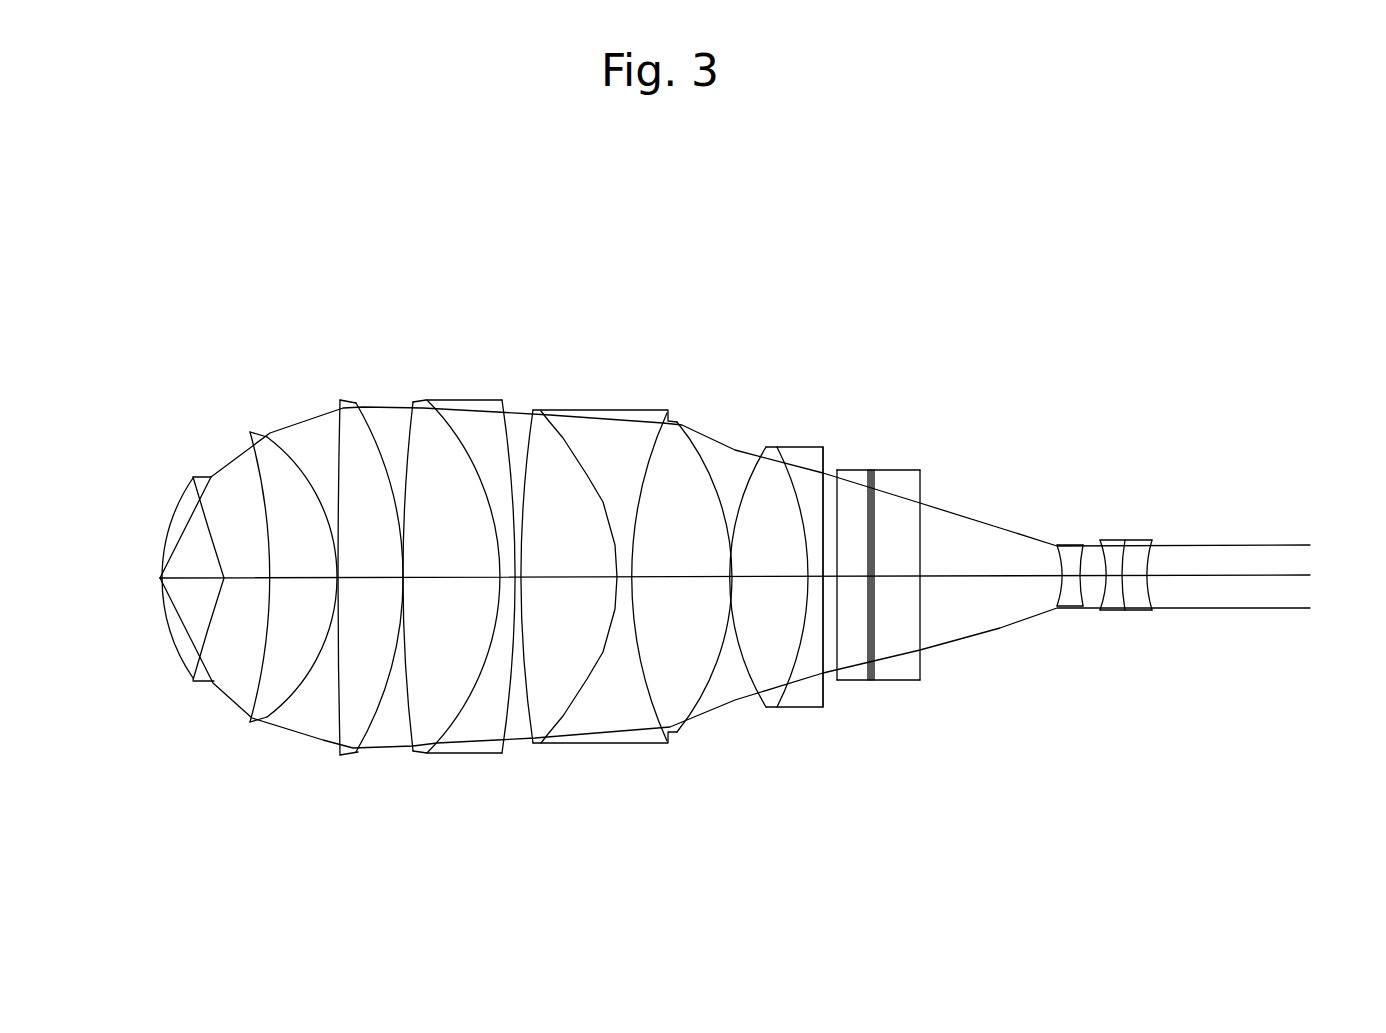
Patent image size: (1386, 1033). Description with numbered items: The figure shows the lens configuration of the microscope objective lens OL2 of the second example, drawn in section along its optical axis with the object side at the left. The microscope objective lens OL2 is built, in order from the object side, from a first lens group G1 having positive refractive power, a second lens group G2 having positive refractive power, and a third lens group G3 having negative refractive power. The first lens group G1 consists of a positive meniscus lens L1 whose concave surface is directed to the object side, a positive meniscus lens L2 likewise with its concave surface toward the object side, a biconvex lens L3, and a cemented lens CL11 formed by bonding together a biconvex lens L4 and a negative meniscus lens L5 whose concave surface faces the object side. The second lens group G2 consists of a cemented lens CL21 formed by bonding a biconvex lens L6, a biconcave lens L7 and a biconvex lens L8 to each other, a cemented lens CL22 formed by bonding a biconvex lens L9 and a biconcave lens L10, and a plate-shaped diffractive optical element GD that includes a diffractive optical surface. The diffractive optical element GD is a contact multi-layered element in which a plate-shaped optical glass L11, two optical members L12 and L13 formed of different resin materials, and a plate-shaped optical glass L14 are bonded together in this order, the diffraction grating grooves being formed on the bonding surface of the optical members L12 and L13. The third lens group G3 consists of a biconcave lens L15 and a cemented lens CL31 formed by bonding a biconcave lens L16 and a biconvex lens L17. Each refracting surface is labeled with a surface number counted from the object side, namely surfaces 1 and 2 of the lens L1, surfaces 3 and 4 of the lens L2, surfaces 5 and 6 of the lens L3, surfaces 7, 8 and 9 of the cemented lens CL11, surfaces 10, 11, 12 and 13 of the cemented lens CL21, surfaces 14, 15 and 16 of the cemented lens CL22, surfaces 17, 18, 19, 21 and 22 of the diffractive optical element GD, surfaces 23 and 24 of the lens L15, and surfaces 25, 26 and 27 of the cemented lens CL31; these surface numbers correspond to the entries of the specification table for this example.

The surface number 1 is at (190, 660).
The surface number 2 is at (195, 681).
The surface number 3 is at (250, 722).
The surface number 4 is at (266, 724).
The surface number 5 is at (347, 748).
The surface number 6 is at (362, 752).
The surface number 7 is at (410, 748).
The surface number 8 is at (430, 753).
The surface number 9 is at (503, 750).
The surface number 10 is at (545, 740).
The surface number 11 is at (556, 742).
The surface number 12 is at (663, 733).
The surface number 13 is at (686, 733).
The surface number 14 is at (755, 703).
The surface number 15 is at (780, 706).
The surface number 16 is at (822, 708).
The surface number 17 is at (836, 681).
The surface number 18 is at (867, 681).
The surface number 19 is at (870, 681).
The surface number 21 is at (875, 681).
The surface number 22 is at (920, 681).
The surface number 23 is at (1057, 602).
The surface number 24 is at (1085, 606).
The surface number 25 is at (1102, 610).
The surface number 26 is at (1126, 610).
The surface number 27 is at (1149, 610).
The positive meniscus lens L1 is at (192, 477).
The positive meniscus lens L2 is at (250, 430).
The biconvex lens L3 is at (343, 400).
The biconvex lens L4 is at (413, 402).
The negative meniscus lens L5 is at (469, 400).
The biconvex lens L6 is at (543, 411).
The biconcave lens L7 is at (615, 412).
The biconvex lens L8 is at (675, 421).
The biconvex lens L9 is at (766, 446).
The biconcave lens L10 is at (793, 446).
The plate-shaped optical glass L11 is at (849, 469).
The optical member L12 is at (870, 469).
The optical member L13 is at (873, 469).
The plate-shaped optical glass L14 is at (898, 469).
The biconcave lens L15 is at (1072, 545).
The biconcave lens L16 is at (1113, 539).
The biconvex lens L17 is at (1140, 539).
The cemented lens CL11 is at (390, 321).
The cemented lens CL21 is at (522, 321).
The cemented lens CL22 is at (795, 354).
The cemented lens CL31 is at (1177, 452).
The diffractive optical element GD is at (960, 389).
The first lens group G1 is at (520, 842).
The second lens group G2 is at (522, 842).
The third lens group G3 is at (1048, 842).
The microscope objective lens OL2 is at (905, 300).